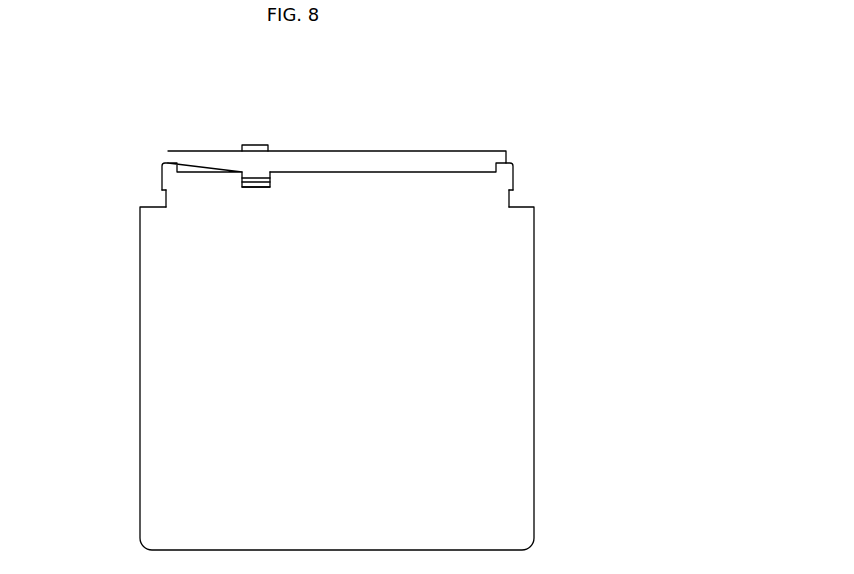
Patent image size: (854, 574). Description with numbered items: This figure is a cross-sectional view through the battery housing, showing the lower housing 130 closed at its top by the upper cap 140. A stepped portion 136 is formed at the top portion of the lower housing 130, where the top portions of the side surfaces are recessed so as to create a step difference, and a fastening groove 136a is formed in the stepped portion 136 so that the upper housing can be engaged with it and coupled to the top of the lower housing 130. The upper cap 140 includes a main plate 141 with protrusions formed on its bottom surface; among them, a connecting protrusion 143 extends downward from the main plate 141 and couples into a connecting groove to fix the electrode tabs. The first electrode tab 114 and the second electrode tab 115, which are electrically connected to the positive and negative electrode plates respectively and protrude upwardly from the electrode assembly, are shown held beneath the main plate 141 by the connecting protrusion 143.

The lower housing 130 is at (130, 396).
The stepped portion 136 is at (162, 173).
The fastening groove 136a is at (162, 195).
The upper cap 140 is at (280, 176).
The main plate 141 is at (417, 160).
The second electrode tab 115 is at (254, 145).
The connecting protrusion 143 is at (263, 176).
The first electrode tab 114 is at (263, 188).